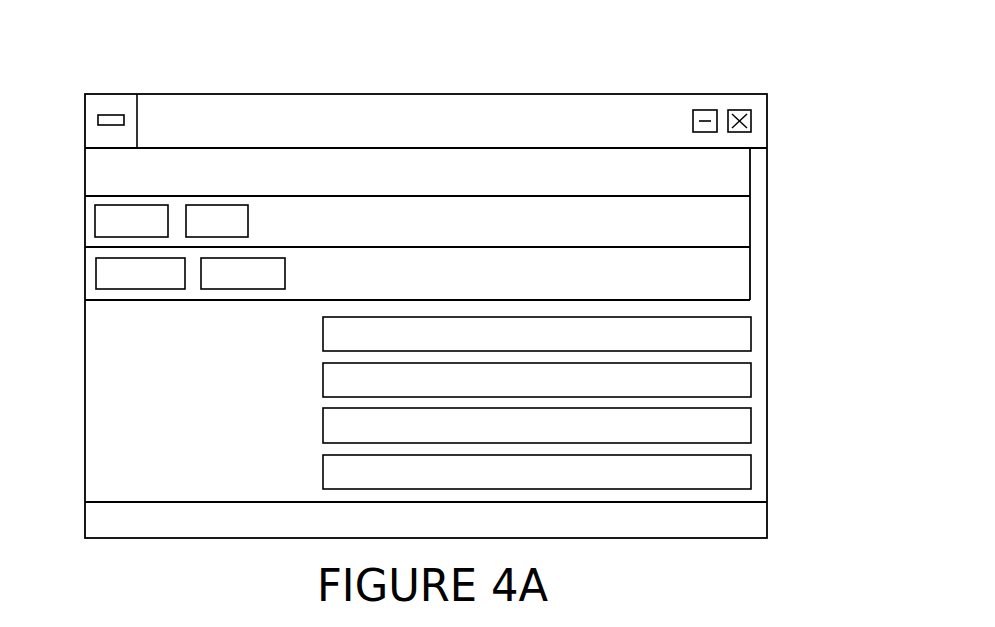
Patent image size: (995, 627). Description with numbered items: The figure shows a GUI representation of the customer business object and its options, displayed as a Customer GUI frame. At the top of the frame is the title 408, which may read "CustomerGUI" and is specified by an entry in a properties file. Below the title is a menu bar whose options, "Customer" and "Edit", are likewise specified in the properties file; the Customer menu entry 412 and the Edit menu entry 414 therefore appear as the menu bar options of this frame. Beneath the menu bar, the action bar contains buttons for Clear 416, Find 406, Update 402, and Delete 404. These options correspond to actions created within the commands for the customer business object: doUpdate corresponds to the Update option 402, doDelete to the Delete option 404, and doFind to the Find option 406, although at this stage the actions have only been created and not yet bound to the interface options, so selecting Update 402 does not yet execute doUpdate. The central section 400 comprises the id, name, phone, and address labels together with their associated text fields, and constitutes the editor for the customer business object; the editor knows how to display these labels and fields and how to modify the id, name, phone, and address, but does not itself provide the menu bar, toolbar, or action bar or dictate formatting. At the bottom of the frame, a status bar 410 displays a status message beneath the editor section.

The editor section 400 is at (751, 318).
The Update option 402 is at (384, 175).
The Delete option 404 is at (284, 273).
The Find option 406 is at (246, 218).
The title 408 is at (510, 123).
The status bar 410 is at (93, 518).
The menu bar (Customer menu) 412 is at (95, 171).
The Edit menu 414 is at (318, 176).
The Clear button 416 is at (385, 147).